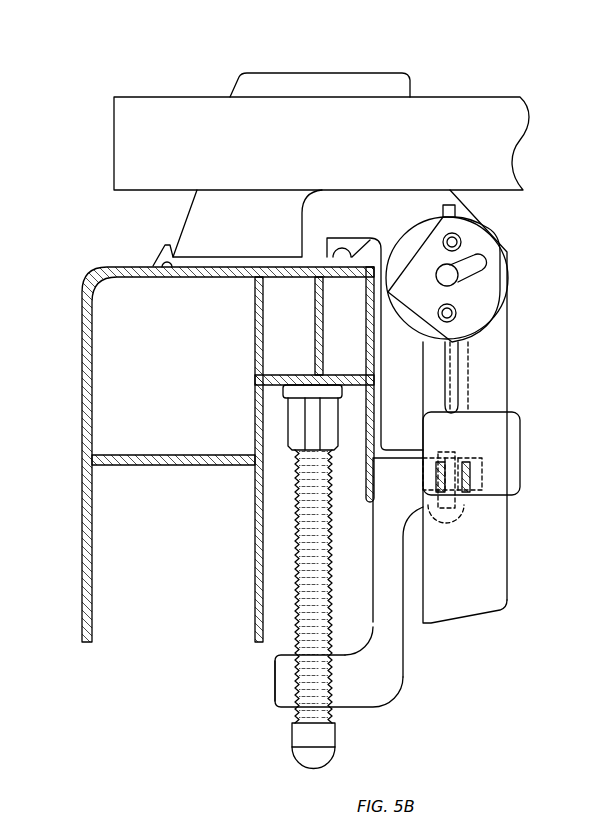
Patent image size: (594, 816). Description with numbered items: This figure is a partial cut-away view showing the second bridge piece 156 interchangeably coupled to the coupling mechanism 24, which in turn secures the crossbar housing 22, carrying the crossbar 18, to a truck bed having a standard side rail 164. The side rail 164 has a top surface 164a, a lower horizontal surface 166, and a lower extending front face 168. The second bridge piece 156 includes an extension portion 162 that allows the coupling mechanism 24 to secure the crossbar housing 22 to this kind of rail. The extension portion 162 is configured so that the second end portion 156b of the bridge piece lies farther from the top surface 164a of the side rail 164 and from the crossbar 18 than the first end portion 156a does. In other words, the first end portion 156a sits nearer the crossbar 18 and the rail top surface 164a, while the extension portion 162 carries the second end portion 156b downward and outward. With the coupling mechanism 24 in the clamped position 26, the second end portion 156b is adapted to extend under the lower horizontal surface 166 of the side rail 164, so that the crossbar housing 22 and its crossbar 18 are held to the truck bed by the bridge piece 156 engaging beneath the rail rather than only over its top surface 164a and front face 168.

The crossbar 18 is at (453, 97).
The crossbar housing 22 is at (180, 232).
The coupling mechanism 24 is at (505, 395).
The clamped position 26 is at (503, 691).
The second bridge piece 156 is at (375, 686).
The first end portion 156a is at (482, 482).
The second end portion 156b is at (275, 680).
The extension portion 162 is at (403, 633).
The side rail 164 is at (100, 286).
The top surface 164a is at (148, 263).
The surface 166 is at (283, 392).
The front face 168 is at (368, 506).